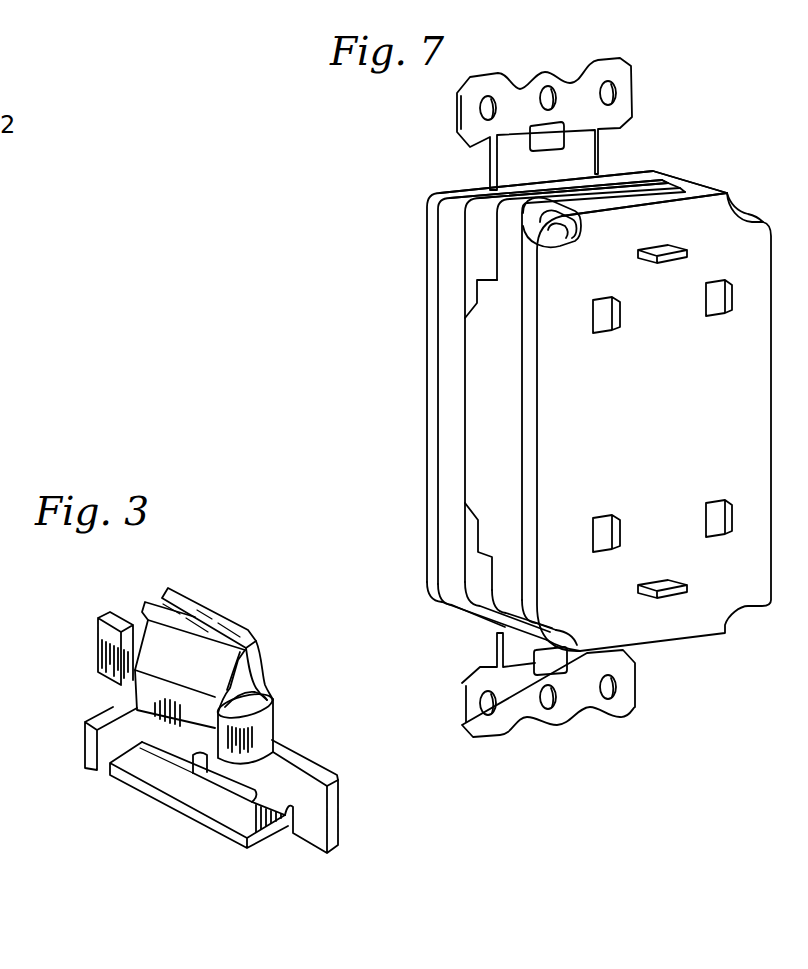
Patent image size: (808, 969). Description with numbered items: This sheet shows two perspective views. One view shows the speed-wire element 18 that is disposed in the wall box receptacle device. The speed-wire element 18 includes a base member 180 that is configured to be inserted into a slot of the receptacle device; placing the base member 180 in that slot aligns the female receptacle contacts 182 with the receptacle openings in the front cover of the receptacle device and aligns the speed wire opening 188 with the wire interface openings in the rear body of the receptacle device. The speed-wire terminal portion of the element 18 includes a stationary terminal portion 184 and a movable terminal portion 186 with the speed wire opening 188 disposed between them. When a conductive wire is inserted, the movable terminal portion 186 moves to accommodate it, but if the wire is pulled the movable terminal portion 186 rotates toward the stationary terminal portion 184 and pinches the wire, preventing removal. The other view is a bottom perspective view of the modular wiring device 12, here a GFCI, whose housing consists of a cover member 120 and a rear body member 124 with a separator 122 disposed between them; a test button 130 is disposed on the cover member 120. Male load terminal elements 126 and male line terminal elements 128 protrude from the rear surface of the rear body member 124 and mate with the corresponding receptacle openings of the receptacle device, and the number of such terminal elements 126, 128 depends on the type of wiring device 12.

In FIG. 7, the modular wiring device 12 is at (746, 136).
In FIG. 7, the cover member 120 is at (429, 355).
In FIG. 7, the separator 122 is at (641, 178).
In FIG. 7, the rear body member 124 is at (673, 187).
In FIG. 7, the male load terminal elements 126 is at (652, 585).
In FIG. 7, the male line terminal elements 128 is at (673, 263).
In FIG. 7, the test button 130 is at (456, 103).
In FIG. 3, the speed-wire element 18 is at (278, 542).
In FIG. 3, the base member 180 is at (287, 753).
In FIG. 3, the female receptacle contacts 182 is at (164, 597).
In FIG. 3, the stationary terminal portion 184 is at (100, 703).
In FIG. 3, the movable terminal portion 186 is at (170, 806).
In FIG. 3, the speed wire opening 188 is at (105, 748).